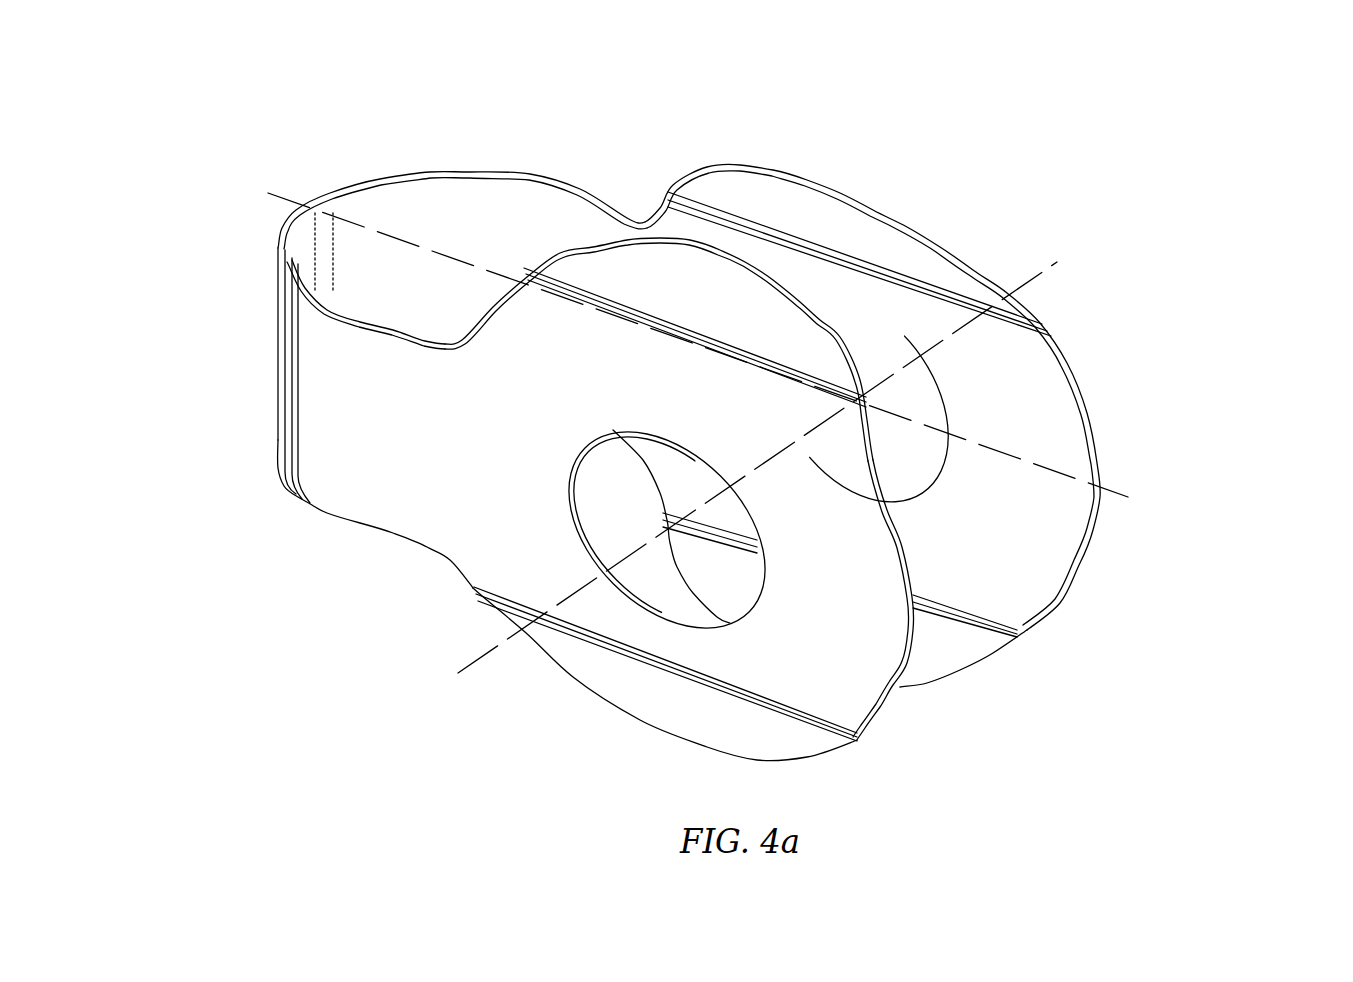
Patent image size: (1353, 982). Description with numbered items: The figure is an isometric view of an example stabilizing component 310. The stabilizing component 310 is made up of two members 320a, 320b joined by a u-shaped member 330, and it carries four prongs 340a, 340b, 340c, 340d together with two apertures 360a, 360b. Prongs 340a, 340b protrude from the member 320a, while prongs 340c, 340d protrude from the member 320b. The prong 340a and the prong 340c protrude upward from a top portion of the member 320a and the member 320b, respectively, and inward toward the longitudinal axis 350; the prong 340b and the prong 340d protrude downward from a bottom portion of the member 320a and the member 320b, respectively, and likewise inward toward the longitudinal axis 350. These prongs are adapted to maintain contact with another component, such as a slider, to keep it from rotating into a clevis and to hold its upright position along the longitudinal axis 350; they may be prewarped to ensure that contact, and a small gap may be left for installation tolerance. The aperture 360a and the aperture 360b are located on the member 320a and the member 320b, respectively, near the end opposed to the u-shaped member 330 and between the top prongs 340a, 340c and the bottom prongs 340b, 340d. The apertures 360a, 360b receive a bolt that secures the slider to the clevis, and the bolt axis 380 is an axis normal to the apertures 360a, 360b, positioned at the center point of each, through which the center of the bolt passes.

The stabilizing component 310 is at (512, 118).
The u-shaped member 330 is at (326, 205).
The member 320a is at (477, 493).
The member 320b is at (1037, 557).
The prong 340a is at (693, 270).
The prong 340b is at (690, 740).
The prong 340c is at (887, 203).
The prong 340d is at (958, 672).
The aperture 360a is at (618, 476).
The aperture 360b is at (870, 330).
The bolt axis 380 is at (1058, 263).
The longitudinal axis 350 is at (1062, 478).